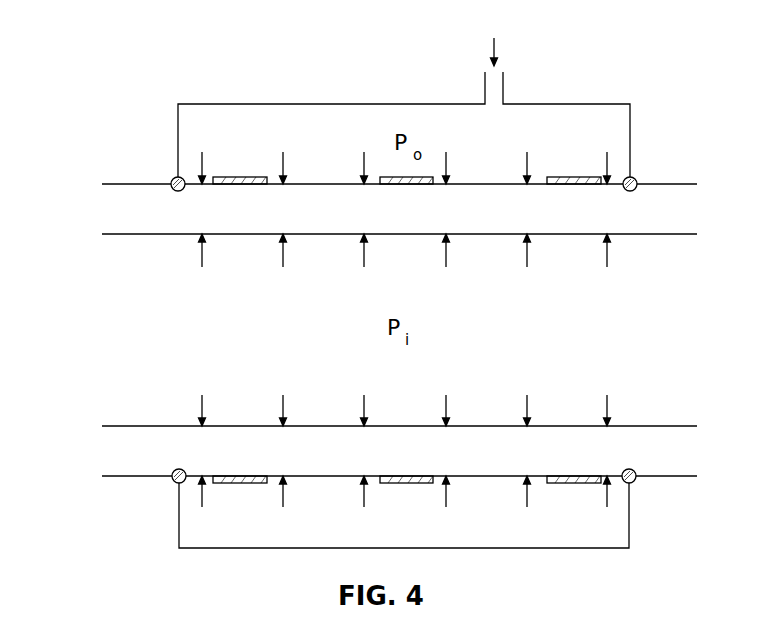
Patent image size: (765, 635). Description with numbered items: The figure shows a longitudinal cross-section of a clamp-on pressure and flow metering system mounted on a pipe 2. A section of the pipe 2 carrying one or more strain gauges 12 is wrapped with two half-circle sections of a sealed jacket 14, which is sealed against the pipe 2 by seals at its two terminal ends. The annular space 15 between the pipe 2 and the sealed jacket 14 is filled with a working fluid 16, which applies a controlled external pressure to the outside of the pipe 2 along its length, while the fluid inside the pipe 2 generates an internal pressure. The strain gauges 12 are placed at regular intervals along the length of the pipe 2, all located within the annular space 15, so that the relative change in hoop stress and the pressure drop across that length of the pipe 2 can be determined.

The pipe 2 is at (105, 212).
The strain gauges 12 is at (234, 180).
The sealed jacket 14 is at (304, 103).
The annular space 15 is at (505, 143).
The working fluid 16 is at (498, 44).